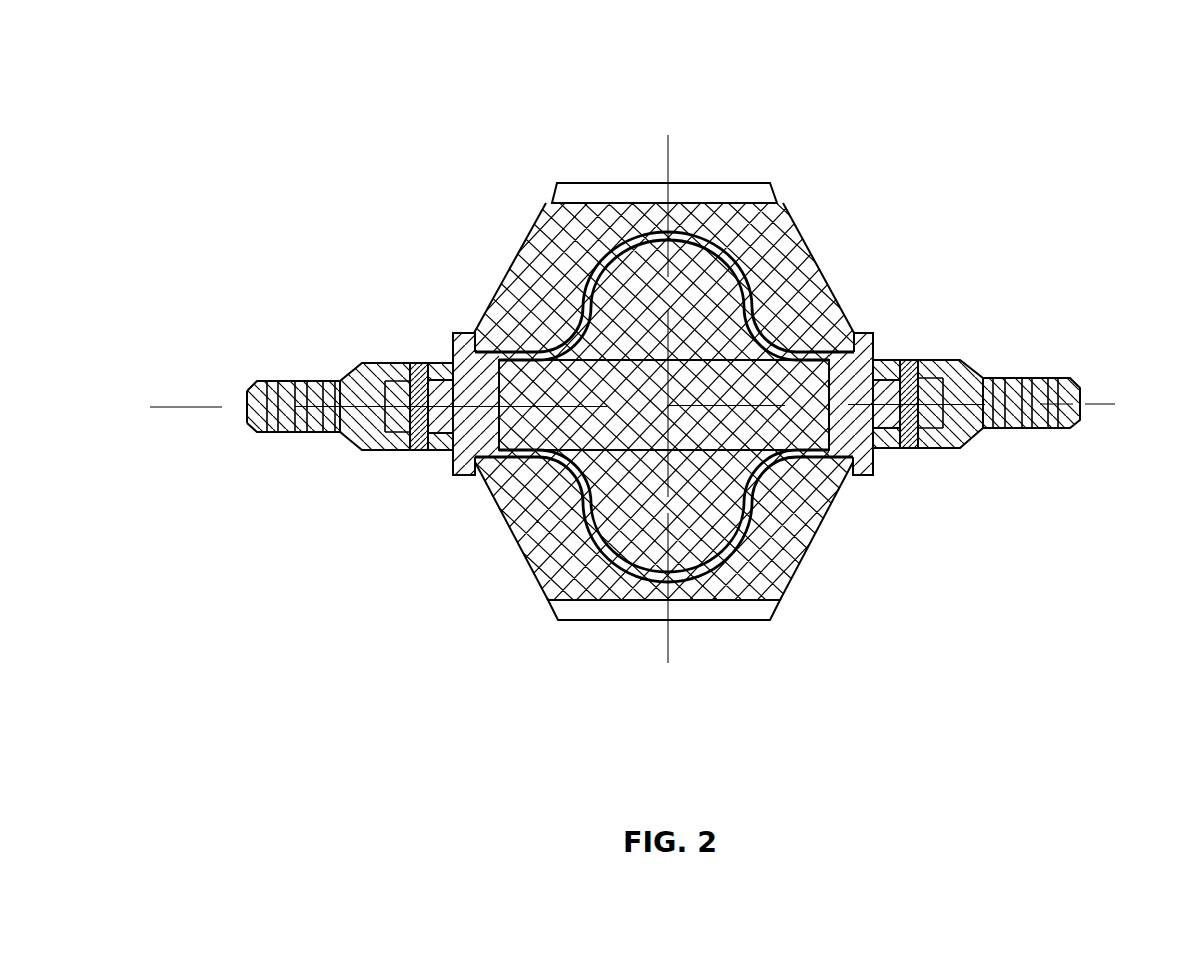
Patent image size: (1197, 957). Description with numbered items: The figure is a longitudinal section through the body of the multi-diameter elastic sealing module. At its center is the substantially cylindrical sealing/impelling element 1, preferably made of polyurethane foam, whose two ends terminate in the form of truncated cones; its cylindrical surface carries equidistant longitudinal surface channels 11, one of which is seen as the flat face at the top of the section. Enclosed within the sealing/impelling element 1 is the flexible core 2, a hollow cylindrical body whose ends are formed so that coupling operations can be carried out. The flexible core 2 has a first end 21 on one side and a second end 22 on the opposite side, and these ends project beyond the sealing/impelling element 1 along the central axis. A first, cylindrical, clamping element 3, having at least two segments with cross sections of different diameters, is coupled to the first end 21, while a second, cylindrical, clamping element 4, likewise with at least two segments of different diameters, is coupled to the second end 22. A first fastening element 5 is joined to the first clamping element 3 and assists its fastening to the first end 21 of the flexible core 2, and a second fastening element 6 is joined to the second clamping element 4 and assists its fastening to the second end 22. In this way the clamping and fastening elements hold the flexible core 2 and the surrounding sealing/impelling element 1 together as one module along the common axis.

The sealing/impelling element 1 is at (800, 228).
The flexible core 2 is at (773, 542).
The longitudinal surface channels 11 is at (688, 192).
The first end 21 is at (465, 443).
The second end 22 is at (867, 353).
The first clamping element 3 is at (352, 445).
The second clamping element 4 is at (978, 446).
The first fastening element 5 is at (412, 363).
The second fastening element 6 is at (930, 356).